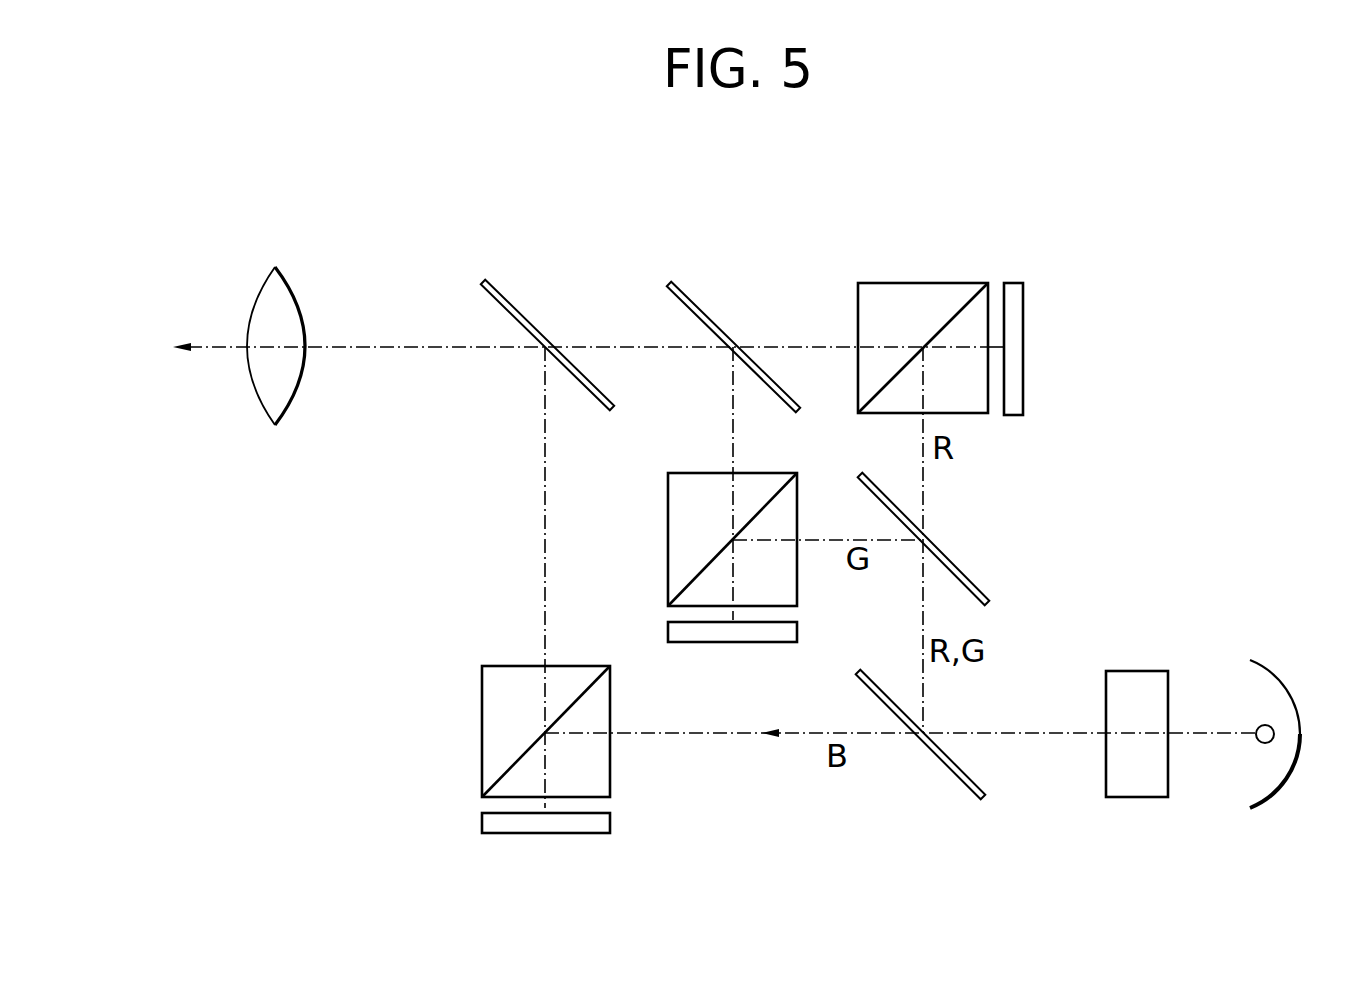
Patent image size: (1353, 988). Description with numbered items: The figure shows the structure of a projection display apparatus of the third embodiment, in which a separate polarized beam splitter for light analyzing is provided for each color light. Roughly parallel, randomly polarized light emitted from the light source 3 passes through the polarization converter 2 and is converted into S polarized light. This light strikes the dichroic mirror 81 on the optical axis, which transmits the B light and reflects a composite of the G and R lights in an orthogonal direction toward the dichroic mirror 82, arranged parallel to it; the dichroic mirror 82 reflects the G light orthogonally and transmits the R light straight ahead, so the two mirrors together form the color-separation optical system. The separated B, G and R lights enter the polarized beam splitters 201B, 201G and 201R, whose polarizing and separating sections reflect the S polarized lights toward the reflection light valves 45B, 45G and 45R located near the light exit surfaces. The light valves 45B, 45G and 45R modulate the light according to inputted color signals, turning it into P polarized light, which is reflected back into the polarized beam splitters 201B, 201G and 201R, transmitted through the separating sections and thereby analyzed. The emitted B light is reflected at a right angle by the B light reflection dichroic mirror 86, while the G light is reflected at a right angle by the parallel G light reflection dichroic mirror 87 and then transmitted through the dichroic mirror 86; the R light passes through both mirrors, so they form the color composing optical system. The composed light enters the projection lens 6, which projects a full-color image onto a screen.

The projection lens 6 is at (280, 268).
The B light reflection dichroic mirror 86 is at (495, 283).
The G light reflection dichroic mirror 87 is at (682, 287).
The dichroic mirror 82 is at (955, 564).
The dichroic mirror 81 is at (945, 768).
The polarized beam splitter 201R is at (905, 283).
The polarized beam splitter 201G is at (797, 582).
The polarized beam splitter 201B is at (603, 780).
The reflection light valve 45R is at (1023, 385).
The reflection light valve 45G is at (750, 645).
The reflection light valve 45B is at (603, 823).
The polarization converter 2 is at (1150, 797).
The light source 3 is at (1262, 790).